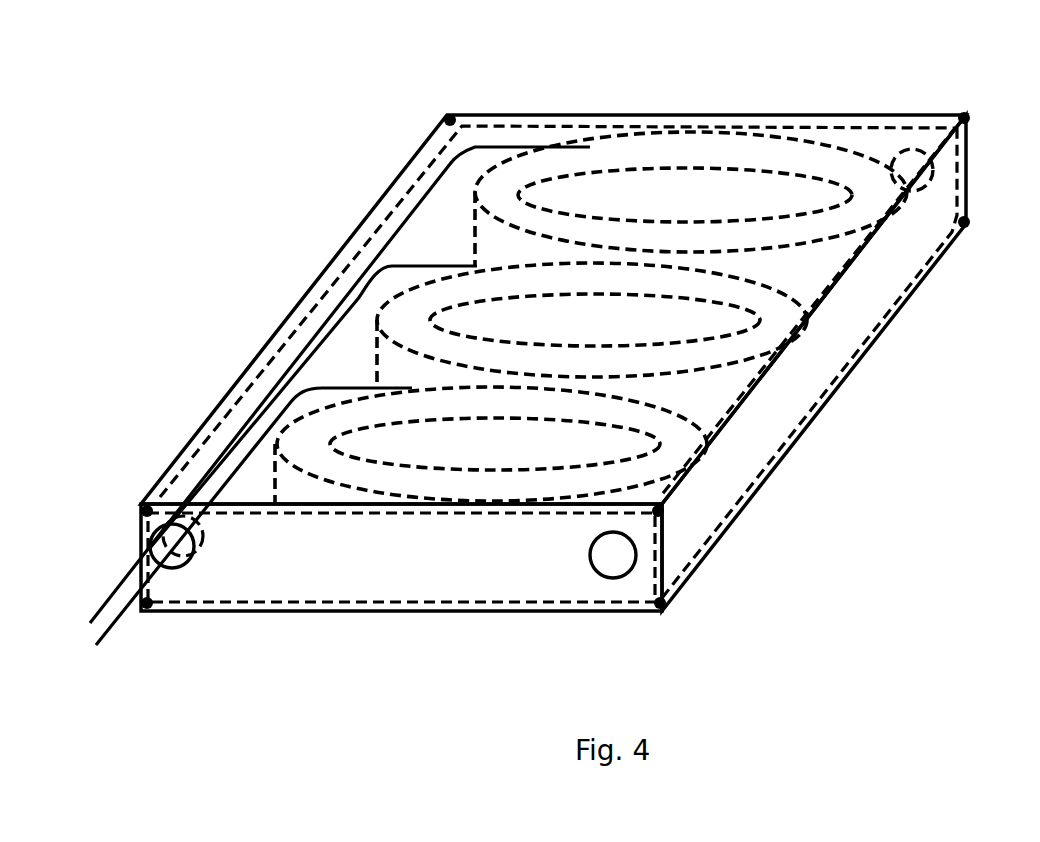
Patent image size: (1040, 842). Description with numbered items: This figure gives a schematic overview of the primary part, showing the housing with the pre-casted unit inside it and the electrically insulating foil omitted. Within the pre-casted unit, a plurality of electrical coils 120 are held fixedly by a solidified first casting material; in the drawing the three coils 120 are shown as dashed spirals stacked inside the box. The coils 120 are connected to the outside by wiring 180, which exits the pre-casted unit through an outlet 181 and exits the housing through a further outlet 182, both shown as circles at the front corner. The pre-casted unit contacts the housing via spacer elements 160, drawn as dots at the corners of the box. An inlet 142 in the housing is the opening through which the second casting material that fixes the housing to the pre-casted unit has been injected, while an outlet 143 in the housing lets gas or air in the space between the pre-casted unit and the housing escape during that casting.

The coils 120 is at (652, 157).
The inlet 142 is at (612, 581).
The outlet 143 is at (911, 148).
The spacer elements 160 is at (446, 113).
The wiring 180 is at (257, 424).
The outlet 181 is at (204, 529).
The outlet 182 is at (191, 565).